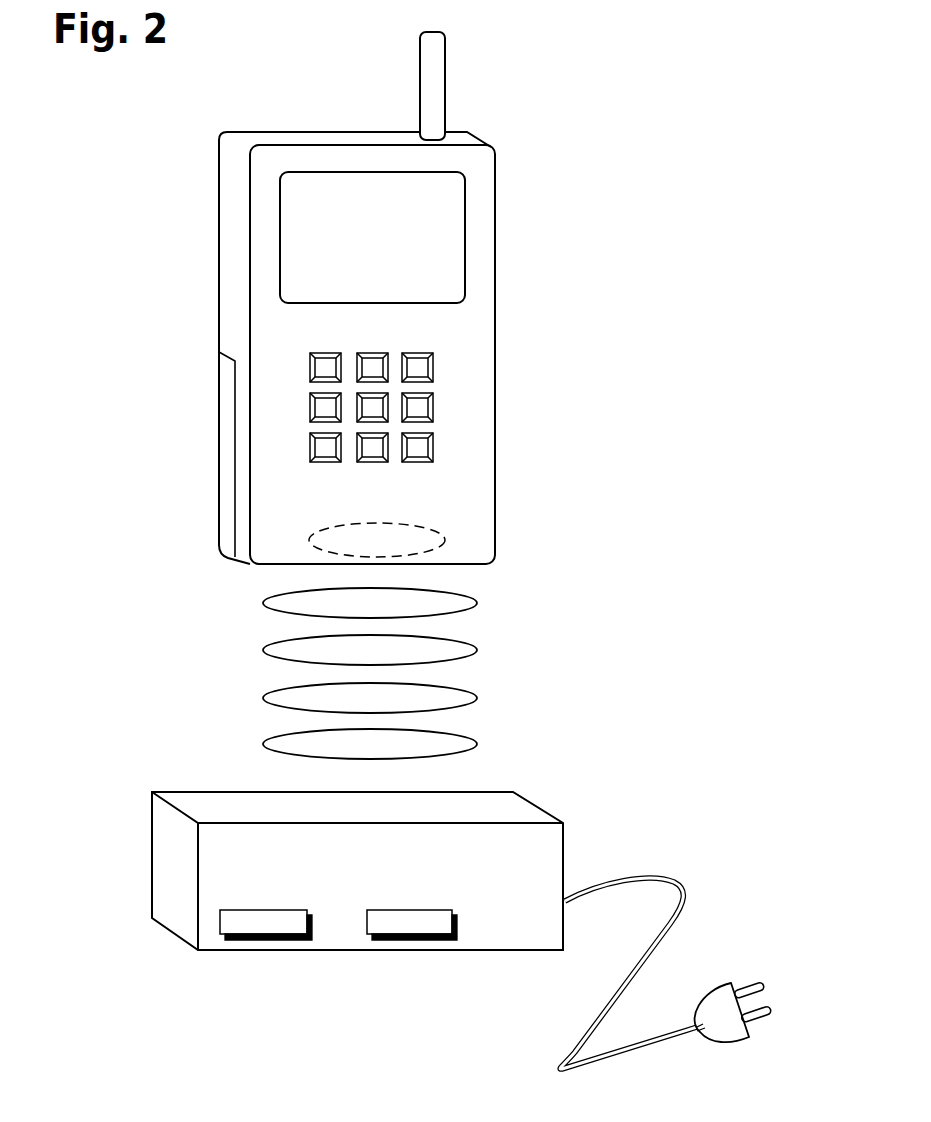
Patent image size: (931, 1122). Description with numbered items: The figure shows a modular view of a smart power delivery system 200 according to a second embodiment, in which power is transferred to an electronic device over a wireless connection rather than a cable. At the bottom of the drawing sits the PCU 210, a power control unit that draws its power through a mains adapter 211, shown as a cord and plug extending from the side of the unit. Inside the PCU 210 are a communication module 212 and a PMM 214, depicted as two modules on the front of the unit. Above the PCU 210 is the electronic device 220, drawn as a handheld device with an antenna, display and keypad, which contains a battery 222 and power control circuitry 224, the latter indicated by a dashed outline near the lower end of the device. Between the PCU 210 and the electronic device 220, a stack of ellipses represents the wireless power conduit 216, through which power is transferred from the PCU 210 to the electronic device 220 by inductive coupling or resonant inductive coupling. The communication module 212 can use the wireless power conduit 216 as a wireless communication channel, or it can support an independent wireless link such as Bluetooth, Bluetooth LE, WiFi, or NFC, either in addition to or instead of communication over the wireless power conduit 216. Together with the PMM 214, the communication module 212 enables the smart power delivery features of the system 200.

The smart power delivery system 200 is at (604, 205).
The PCU 210 is at (152, 834).
The mains adapter 211 is at (725, 1033).
The communication module 212 is at (265, 928).
The PMM 214 is at (418, 928).
The wireless power conduit 216 is at (564, 680).
The electronic device 220 is at (219, 170).
The battery 222 is at (219, 453).
The power control circuitry 224 is at (393, 551).